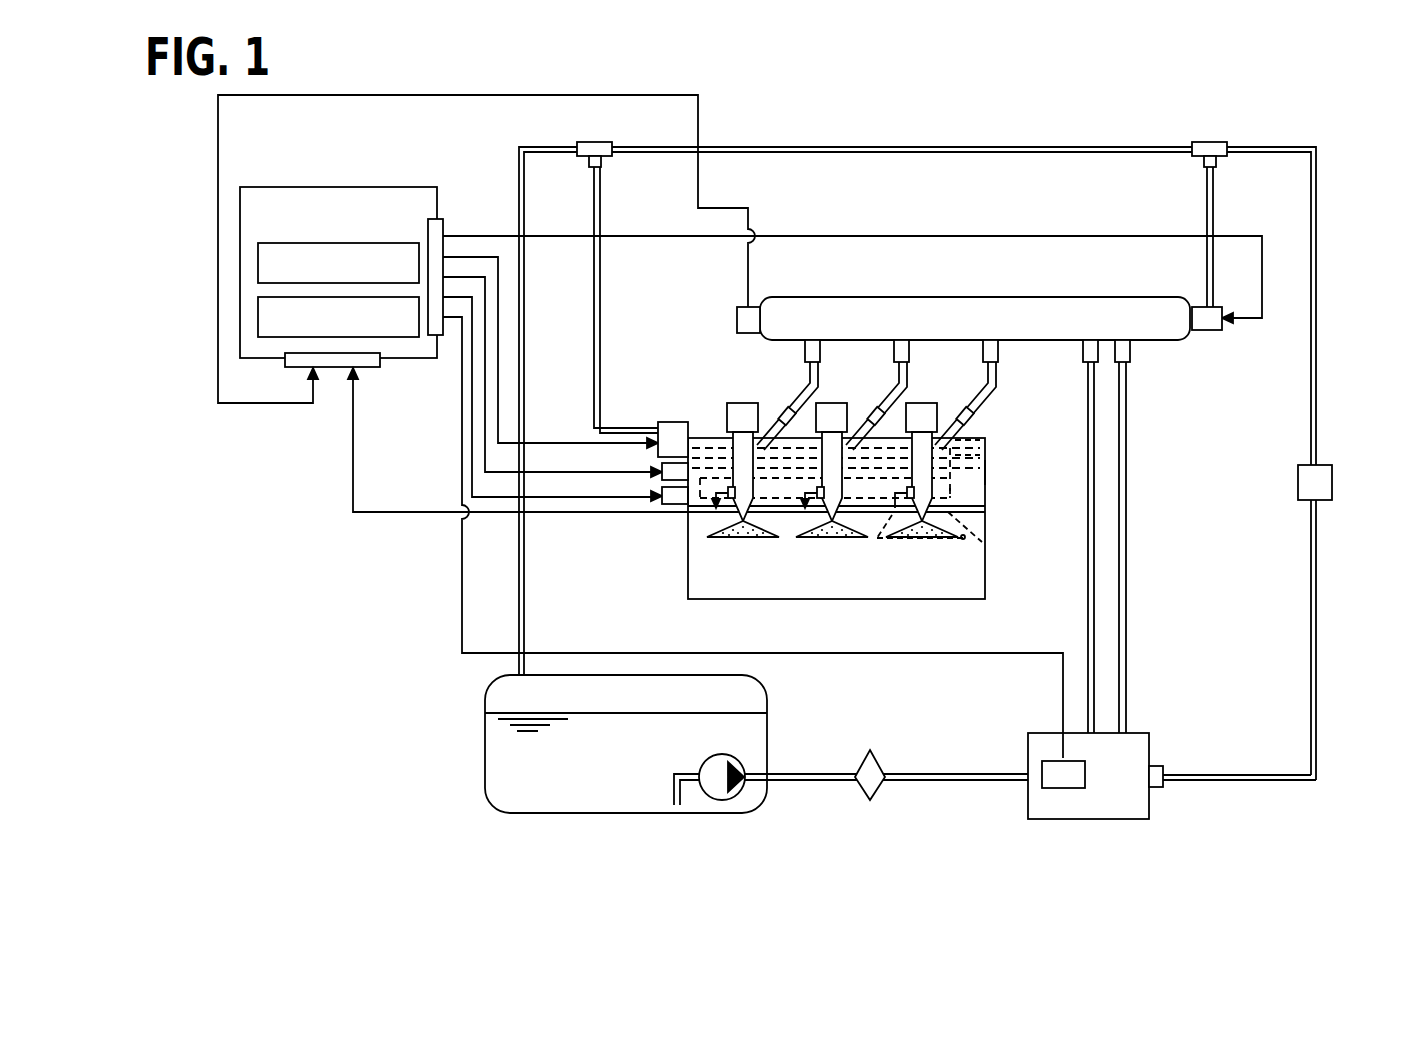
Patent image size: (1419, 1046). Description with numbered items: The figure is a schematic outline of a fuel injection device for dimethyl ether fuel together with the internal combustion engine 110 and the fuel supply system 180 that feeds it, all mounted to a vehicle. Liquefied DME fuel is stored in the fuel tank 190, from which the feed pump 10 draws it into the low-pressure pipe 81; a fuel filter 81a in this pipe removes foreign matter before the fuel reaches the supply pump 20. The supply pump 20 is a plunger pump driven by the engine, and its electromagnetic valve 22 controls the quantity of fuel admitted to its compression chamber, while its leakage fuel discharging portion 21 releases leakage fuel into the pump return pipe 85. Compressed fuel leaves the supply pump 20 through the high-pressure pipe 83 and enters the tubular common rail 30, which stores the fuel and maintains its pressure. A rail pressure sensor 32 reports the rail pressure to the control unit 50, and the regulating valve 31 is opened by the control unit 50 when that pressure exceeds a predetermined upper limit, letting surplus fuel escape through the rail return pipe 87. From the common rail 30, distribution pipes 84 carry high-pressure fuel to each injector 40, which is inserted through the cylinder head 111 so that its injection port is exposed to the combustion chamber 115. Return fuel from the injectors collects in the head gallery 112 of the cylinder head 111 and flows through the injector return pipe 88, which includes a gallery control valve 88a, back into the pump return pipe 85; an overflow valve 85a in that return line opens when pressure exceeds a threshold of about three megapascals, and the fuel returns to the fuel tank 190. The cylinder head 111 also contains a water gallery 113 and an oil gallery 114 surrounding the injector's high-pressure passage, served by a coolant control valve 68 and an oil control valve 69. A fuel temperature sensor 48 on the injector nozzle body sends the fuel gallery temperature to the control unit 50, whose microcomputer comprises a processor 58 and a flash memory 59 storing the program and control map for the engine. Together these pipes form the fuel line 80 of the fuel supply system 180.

The feed pump 10 is at (700, 764).
The supply pump 20 is at (1090, 820).
The leakage fuel discharging portion 21 is at (1160, 788).
The electromagnetic valve 22 is at (1052, 789).
The common rail 30 is at (1093, 297).
The regulating valve 31 is at (1212, 331).
The rail pressure sensor 32 is at (737, 312).
The injector 40 is at (742, 403).
The fuel temperature sensor 48 is at (912, 499).
The control unit 50 is at (259, 187).
The processor 58 is at (392, 243).
The flash memory 59 is at (395, 338).
The coolant control valve 68 is at (684, 441).
The oil control valve 69 is at (678, 505).
The fuel line 80 is at (1326, 779).
The low-pressure pipe 81 is at (935, 783).
The fuel filter 81a is at (870, 802).
The high-pressure pipe 83 is at (1130, 673).
The distribution pipe 84 is at (806, 380).
The pump return pipe 85 is at (1318, 683).
The overflow valve 85a is at (1333, 466).
The rail return pipe 87 is at (1215, 203).
The injector return pipe 88 is at (601, 202).
The gallery control valve 88a is at (658, 422).
The internal combustion engine 110 is at (681, 586).
The cylinder head 111 is at (986, 472).
The head gallery 112 is at (968, 433).
The water gallery 113 is at (960, 453).
The oil gallery 114 is at (960, 492).
The combustion chamber 115 is at (976, 541).
The fuel supply system 180 is at (1322, 139).
The fuel tank 190 is at (485, 740).